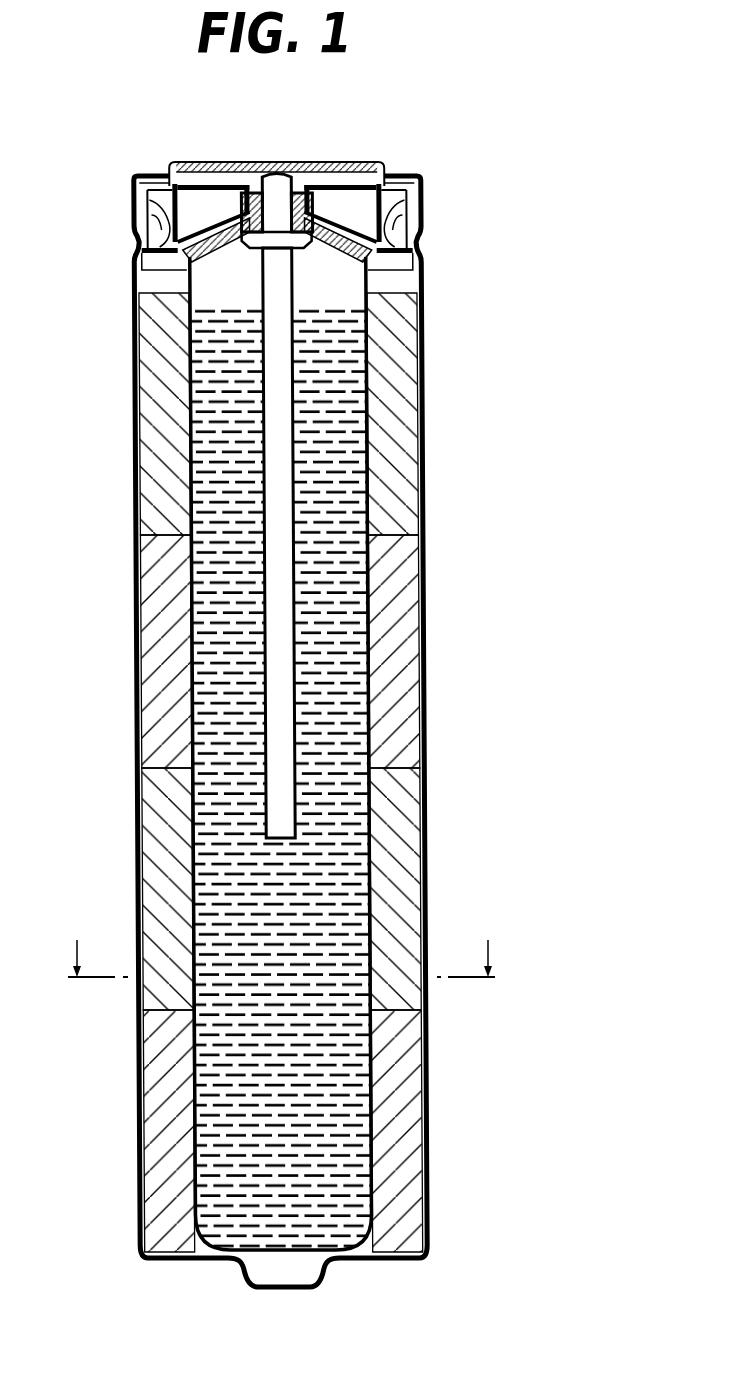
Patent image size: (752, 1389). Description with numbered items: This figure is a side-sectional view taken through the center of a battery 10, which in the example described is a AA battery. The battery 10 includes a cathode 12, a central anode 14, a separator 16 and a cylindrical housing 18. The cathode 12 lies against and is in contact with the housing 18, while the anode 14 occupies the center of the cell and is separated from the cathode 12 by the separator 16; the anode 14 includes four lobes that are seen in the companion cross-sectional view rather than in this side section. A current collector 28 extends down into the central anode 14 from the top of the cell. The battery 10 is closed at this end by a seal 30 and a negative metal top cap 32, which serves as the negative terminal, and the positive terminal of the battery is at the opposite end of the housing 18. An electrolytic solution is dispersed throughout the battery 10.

The battery 10 is at (548, 242).
The cathode 12 is at (408, 388).
The anode 14 is at (340, 867).
The separator 16 is at (190, 700).
The cylindrical housing 18 is at (133, 497).
The current collector 28 is at (282, 648).
The seal 30 is at (180, 253).
The negative metal top cap 32 is at (371, 162).